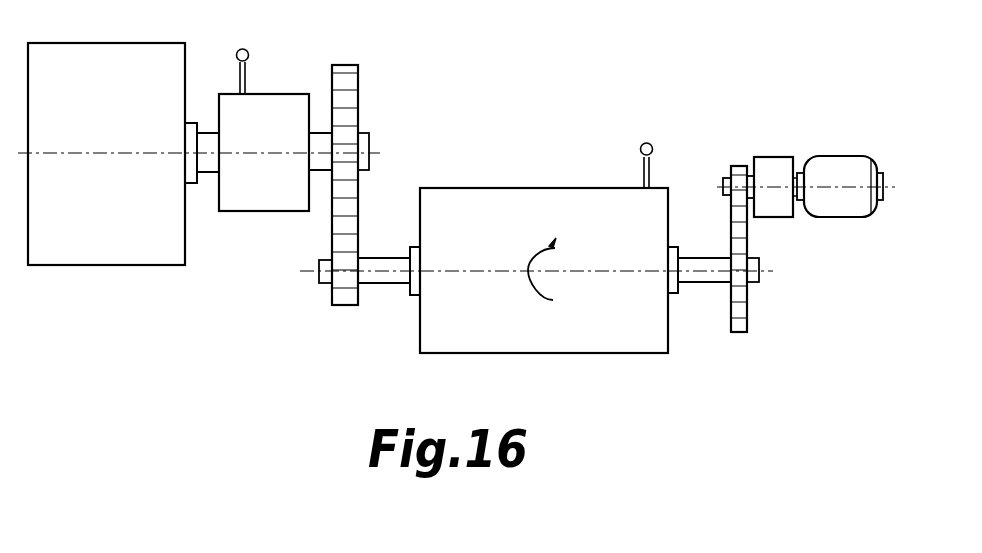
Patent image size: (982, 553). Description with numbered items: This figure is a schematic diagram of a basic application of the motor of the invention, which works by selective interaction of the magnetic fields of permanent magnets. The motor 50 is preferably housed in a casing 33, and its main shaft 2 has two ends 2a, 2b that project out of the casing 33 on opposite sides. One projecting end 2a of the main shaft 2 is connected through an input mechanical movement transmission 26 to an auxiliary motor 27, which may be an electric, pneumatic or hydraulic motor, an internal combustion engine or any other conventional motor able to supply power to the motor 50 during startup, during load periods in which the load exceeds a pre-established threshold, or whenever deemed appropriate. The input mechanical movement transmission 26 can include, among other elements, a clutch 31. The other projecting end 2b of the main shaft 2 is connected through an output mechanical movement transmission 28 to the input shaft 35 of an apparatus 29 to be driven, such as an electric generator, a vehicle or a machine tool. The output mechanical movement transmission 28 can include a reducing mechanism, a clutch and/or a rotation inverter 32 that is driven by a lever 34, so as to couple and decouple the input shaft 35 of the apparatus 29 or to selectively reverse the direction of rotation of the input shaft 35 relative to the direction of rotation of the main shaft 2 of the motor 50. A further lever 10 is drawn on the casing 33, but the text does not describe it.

The main shaft 2 is at (502, 272).
The projecting end of the main shaft 2a is at (717, 283).
The projecting end of the main shaft 2b is at (385, 277).
The operating lever 10 is at (650, 168).
The input mechanical movement transmission 26 is at (782, 250).
The auxiliary motor 27 is at (850, 163).
The output mechanical movement transmission 28 is at (392, 178).
The apparatus to be driven 29 is at (82, 255).
The clutch 31 is at (775, 163).
The rotation inverter 32 is at (279, 203).
The casing 33 is at (542, 195).
The lever 34 is at (245, 75).
The input shaft 35 is at (208, 163).
The motor 50 is at (576, 178).